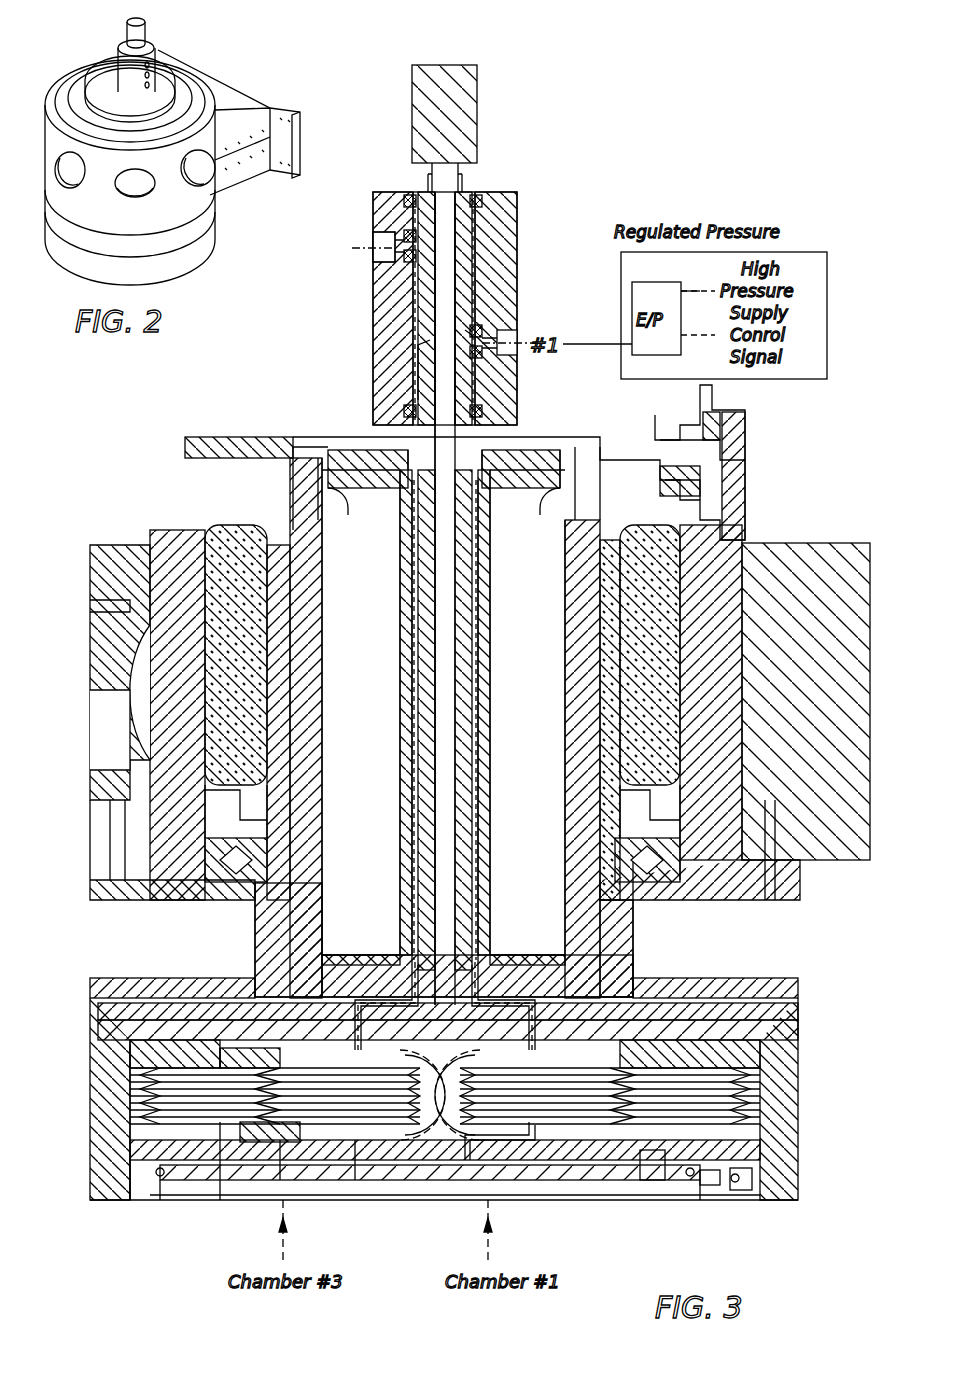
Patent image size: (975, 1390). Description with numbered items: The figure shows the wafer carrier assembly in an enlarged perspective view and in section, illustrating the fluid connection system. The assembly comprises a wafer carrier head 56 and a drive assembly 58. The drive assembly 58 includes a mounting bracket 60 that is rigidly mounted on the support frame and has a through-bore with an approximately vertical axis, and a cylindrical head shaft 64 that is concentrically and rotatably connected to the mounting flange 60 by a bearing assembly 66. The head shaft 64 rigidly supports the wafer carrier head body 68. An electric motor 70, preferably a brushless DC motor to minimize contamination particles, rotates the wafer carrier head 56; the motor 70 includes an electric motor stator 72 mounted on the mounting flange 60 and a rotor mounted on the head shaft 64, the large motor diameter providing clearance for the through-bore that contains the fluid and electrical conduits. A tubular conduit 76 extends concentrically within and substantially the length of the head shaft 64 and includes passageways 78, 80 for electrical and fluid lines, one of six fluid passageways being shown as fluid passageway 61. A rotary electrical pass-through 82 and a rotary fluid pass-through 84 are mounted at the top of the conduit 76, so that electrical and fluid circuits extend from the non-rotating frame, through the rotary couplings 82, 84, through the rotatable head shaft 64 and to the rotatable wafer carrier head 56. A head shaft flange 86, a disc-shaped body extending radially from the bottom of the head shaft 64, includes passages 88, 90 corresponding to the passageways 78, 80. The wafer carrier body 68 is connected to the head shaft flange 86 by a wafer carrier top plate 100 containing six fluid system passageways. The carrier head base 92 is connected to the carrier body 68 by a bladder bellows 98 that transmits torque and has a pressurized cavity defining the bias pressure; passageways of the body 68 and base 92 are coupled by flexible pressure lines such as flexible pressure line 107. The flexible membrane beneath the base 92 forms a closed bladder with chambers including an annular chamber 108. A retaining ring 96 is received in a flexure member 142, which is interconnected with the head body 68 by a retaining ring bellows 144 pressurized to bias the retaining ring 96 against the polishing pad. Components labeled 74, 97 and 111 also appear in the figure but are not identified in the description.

In FIG. 2, the wafer carrier head 56 is at (233, 42).
In FIG. 3, the wafer carrier head 56 is at (438, 1101).
In FIG. 3, the drive assembly 58 is at (737, 642).
In FIG. 3, the mounting bracket 60 is at (832, 560).
In FIG. 3, the fluid passageway 61 is at (528, 345).
In FIG. 3, the head shaft 64 is at (633, 942).
In FIG. 3, the bearing assembly 66 is at (637, 870).
In FIG. 3, the wafer carrier head body 68 is at (790, 1120).
In FIG. 3, the electric motor 70 is at (361, 678).
In FIG. 3, the electric motor stator 72 is at (222, 527).
In FIG. 3, the magnet 74 is at (282, 548).
In FIG. 3, the tubular conduit 76 is at (480, 690).
In FIG. 3, the electric passageway 78 is at (448, 648).
In FIG. 3, the fluid passageway 80 is at (483, 738).
In FIG. 3, the rotary electrical pass-through 82 is at (478, 113).
In FIG. 3, the rotary fluid pass-through 84 is at (515, 220).
In FIG. 3, the head shaft flange 86 is at (798, 985).
In FIG. 3, the passage 88 is at (470, 935).
In FIG. 3, the passage 90 is at (552, 1000).
In FIG. 3, the carrier head base 92 is at (415, 1172).
In FIG. 3, the retaining ring 96 is at (705, 1185).
In FIG. 3, the retainer 97 is at (653, 1182).
In FIG. 3, the bladder bellows 98 is at (280, 1072).
In FIG. 3, the wafer carrier top plate 100 is at (800, 1028).
In FIG. 3, the flexible pressure line 107 is at (580, 1175).
In FIG. 3, the second annular chamber 108 is at (463, 1175).
In FIG. 3, the passage 111 is at (542, 1050).
In FIG. 3, the flexure member 142 is at (748, 1190).
In FIG. 3, the retaining ring bellows 144 is at (130, 1080).